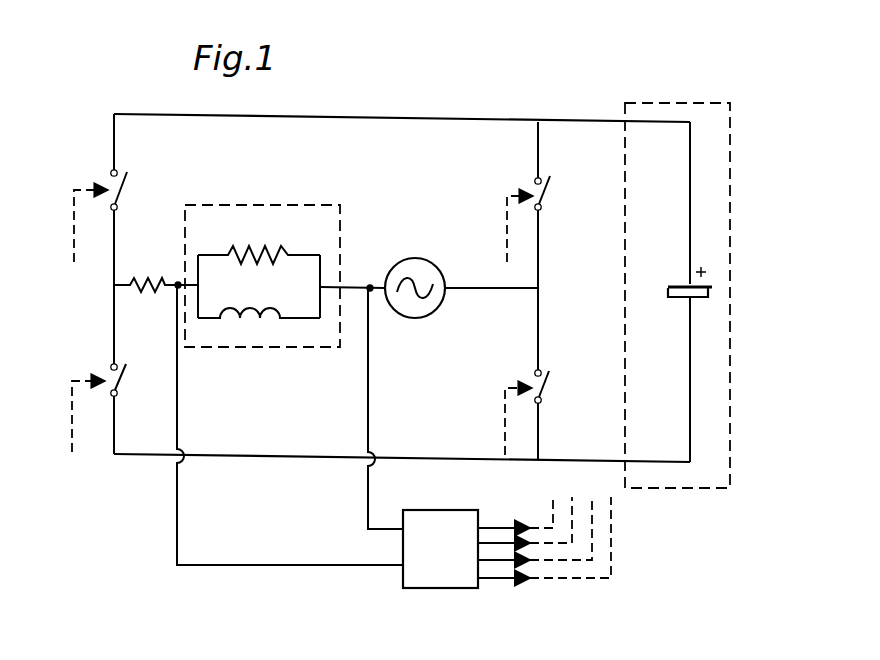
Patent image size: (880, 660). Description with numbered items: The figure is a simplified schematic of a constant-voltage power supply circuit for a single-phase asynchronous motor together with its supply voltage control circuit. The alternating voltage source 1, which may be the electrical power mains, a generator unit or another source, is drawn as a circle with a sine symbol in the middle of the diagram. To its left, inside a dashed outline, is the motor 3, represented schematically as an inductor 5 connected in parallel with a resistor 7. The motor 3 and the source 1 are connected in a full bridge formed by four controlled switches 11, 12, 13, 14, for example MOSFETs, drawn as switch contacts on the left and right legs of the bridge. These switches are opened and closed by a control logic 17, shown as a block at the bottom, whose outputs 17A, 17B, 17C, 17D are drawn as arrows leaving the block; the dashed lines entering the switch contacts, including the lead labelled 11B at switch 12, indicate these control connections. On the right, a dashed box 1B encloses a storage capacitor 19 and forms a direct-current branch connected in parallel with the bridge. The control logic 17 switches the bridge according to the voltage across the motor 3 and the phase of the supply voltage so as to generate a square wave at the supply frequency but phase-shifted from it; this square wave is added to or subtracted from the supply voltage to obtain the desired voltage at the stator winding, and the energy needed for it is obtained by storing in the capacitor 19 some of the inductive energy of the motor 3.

The alternating voltage source 1 is at (392, 259).
The battery unit 1B is at (702, 295).
The motor 3 is at (275, 249).
The inductor 5 is at (243, 321).
The resistor 7 is at (285, 256).
The controlled switch 11 is at (129, 192).
The switch control signal 11B is at (507, 235).
The controlled switch 12 is at (550, 196).
The controlled switch 13 is at (549, 395).
The controlled switch 14 is at (124, 380).
The control logic 17 is at (405, 580).
The output of the control logic 17A is at (73, 213).
The output of the control logic 17B is at (72, 397).
The output of the control logic 17C is at (505, 418).
The output of the control logic 17D is at (505, 580).
The storage capacitor 19 is at (697, 297).